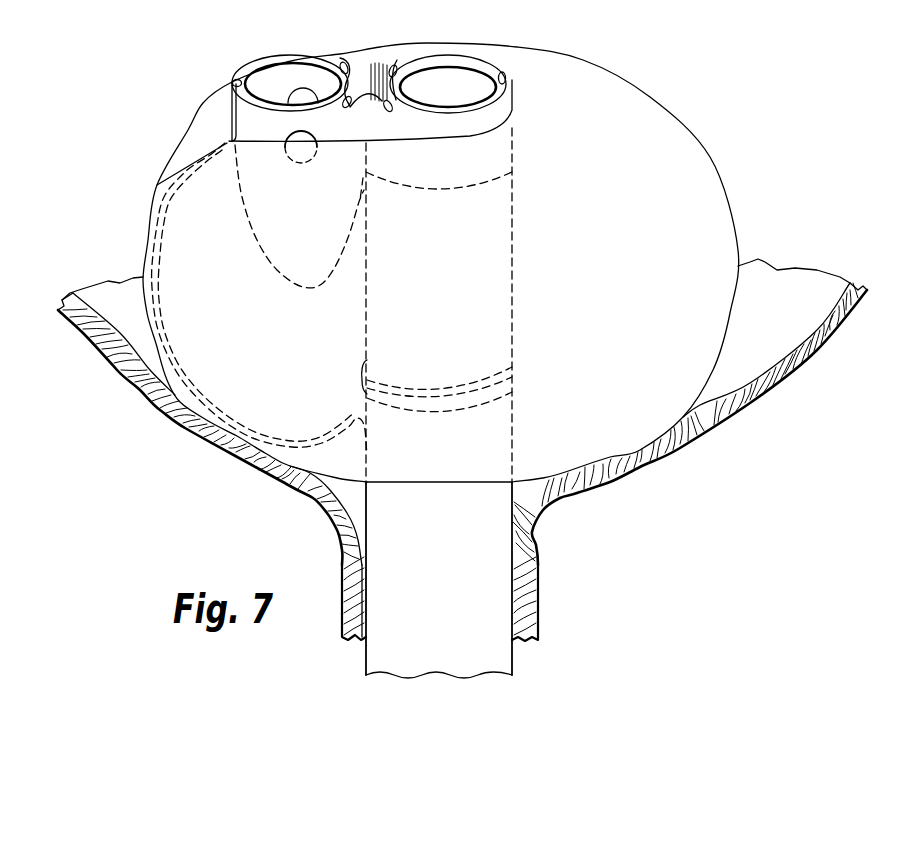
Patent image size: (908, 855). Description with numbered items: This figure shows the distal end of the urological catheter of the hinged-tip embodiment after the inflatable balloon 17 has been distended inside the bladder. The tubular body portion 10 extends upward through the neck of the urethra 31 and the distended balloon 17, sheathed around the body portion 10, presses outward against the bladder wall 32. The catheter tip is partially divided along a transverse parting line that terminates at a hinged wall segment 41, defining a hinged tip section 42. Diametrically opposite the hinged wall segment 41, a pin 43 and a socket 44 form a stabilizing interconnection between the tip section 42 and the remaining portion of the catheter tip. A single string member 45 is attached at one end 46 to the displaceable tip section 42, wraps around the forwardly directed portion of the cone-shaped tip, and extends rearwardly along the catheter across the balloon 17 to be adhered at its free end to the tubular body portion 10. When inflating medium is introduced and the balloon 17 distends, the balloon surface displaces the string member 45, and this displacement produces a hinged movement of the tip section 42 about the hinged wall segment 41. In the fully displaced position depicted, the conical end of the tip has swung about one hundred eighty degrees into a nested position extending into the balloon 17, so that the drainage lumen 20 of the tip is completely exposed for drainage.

The tubular body portion 10 is at (448, 547).
The inflatable balloon 17 is at (630, 294).
The drainage lumen 20 is at (448, 96).
The neck of the urethra 31 is at (518, 572).
The bladder wall 32 is at (693, 430).
The hinged wall segment 41 is at (368, 63).
The hinged tip section 42 is at (268, 135).
The pin 43 is at (508, 78).
The socket 44 is at (239, 78).
The string member 45 is at (172, 177).
The end of string member 46 is at (228, 122).